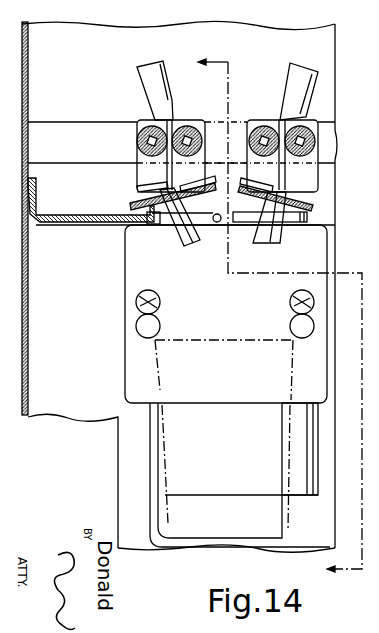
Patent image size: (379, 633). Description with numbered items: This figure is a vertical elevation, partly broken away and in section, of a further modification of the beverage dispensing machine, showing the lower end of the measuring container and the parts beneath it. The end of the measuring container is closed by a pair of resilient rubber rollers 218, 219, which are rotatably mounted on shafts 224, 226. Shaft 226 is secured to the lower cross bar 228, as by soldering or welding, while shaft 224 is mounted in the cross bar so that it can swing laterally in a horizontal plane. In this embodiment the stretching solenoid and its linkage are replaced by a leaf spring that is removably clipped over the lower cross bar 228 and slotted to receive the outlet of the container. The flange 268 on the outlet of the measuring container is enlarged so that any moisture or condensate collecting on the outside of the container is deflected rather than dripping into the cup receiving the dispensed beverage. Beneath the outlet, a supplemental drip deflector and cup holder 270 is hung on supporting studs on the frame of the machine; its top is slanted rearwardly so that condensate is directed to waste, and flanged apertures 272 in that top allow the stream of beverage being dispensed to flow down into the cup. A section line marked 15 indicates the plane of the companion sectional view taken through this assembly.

The section line 15- 15 is at (286, 319).
The resilient rubber roller 218 is at (137, 123).
The resilient rubber roller 219 is at (175, 130).
The shaft 224 is at (136, 147).
The shaft 226 is at (209, 127).
The lower cross bar 228 is at (47, 133).
The flange 268 is at (134, 205).
The drip deflector and cup holder 270 is at (317, 268).
The flanged apertures 272 is at (165, 218).